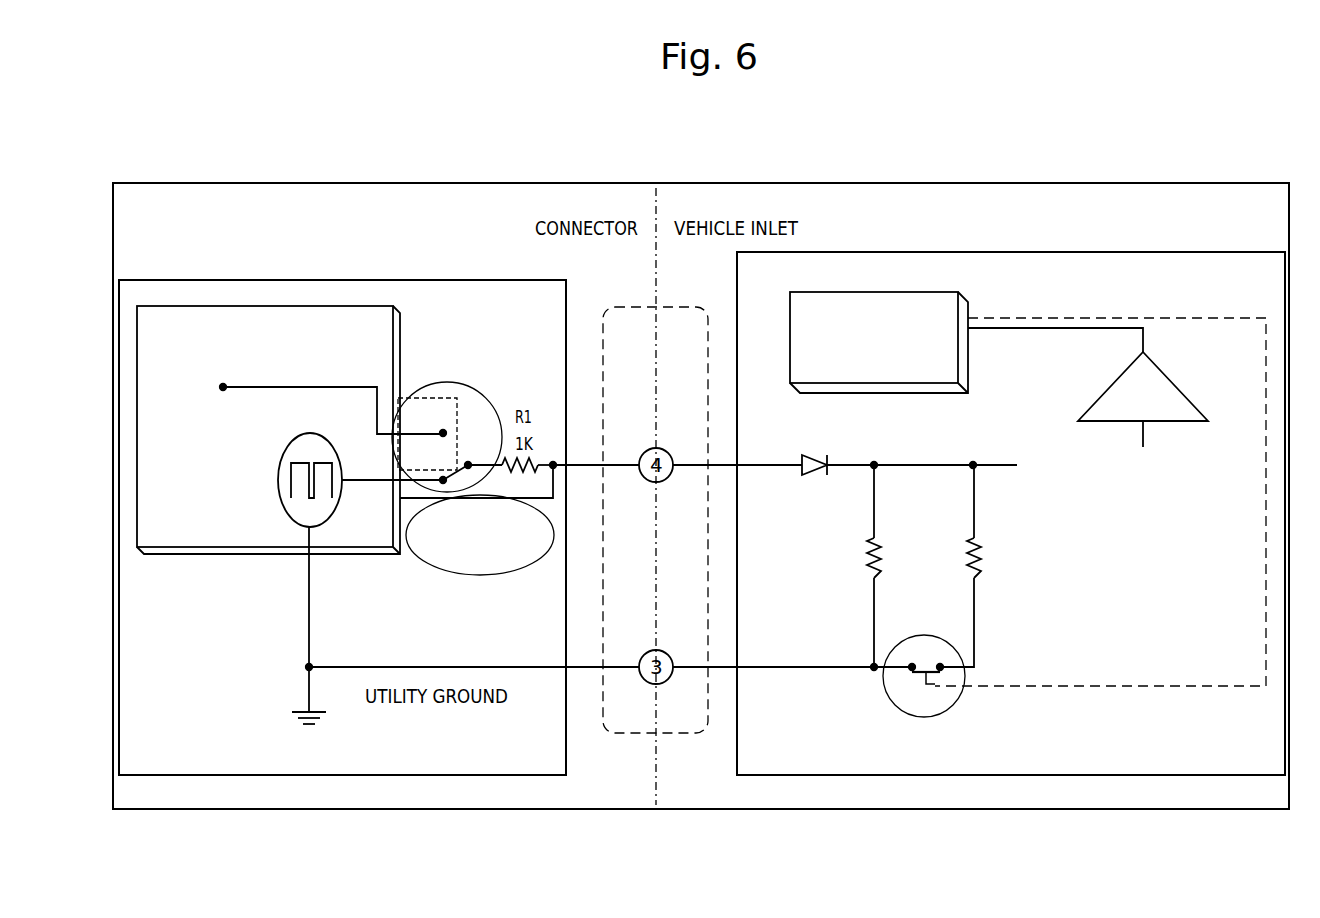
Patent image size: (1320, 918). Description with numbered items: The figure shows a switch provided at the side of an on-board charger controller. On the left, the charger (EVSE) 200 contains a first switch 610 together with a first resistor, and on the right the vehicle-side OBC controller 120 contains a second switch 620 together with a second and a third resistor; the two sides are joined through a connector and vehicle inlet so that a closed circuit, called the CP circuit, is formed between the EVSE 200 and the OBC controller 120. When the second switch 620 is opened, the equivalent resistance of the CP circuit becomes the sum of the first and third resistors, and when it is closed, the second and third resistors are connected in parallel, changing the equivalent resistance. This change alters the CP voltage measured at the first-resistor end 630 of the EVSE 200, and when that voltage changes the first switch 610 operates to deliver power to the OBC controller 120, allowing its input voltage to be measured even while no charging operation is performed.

The charger (EVSE) 200 is at (336, 281).
The S1 switch 610 is at (467, 383).
The R1 end 630 is at (510, 572).
The OBC controller 120 is at (1067, 252).
The S2 switch 620 is at (948, 708).